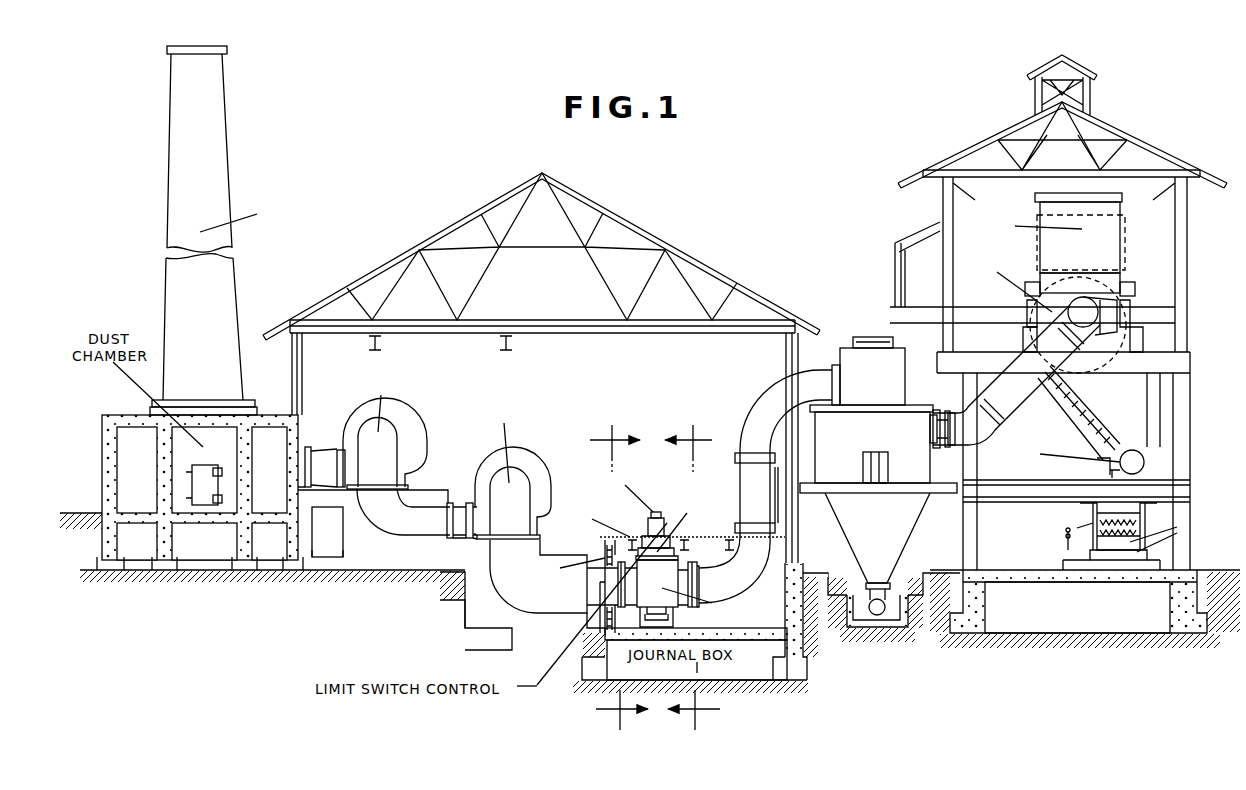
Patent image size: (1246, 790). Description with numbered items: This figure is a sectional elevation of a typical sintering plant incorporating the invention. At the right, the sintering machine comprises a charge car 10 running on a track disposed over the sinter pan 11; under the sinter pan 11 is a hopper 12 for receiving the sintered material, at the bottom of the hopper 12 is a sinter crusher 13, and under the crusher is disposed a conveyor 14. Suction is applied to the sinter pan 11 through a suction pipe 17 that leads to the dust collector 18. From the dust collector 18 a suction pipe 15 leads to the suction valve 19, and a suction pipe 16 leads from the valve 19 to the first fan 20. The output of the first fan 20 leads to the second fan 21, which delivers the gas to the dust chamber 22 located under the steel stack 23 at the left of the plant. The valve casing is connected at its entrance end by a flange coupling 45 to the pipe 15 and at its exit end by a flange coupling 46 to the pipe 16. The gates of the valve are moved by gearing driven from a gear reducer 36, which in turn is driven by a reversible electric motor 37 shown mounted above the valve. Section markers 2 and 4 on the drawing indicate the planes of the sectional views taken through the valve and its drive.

The charge car 10 is at (1049, 244).
The sinter pan 11 is at (1105, 320).
The hopper 12 is at (1086, 413).
The sinter crusher 13 is at (1132, 452).
The conveyor 14 is at (1147, 515).
The suction pipe 15 is at (770, 407).
The suction pipe 16 is at (600, 586).
The suction pipe 17 is at (1013, 384).
The dust collector 18 is at (930, 505).
The suction valve 19 is at (663, 578).
The first fan 20 is at (517, 483).
The second fan 21 is at (387, 435).
The dust chamber 22 is at (226, 481).
The steel stack 23 is at (222, 278).
The gear reducer 36 is at (648, 545).
The reversible electric motor 37 is at (673, 516).
The flange coupling 45 is at (699, 586).
The flange coupling 46 is at (604, 604).
The section line 2- 2 is at (701, 577).
The section line 4- 4 is at (608, 577).